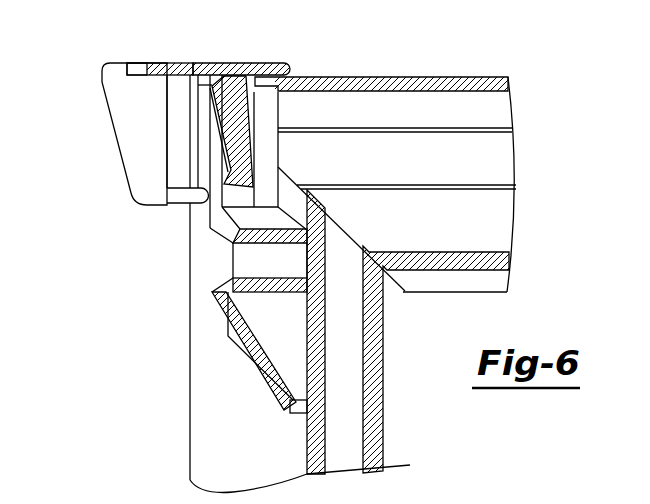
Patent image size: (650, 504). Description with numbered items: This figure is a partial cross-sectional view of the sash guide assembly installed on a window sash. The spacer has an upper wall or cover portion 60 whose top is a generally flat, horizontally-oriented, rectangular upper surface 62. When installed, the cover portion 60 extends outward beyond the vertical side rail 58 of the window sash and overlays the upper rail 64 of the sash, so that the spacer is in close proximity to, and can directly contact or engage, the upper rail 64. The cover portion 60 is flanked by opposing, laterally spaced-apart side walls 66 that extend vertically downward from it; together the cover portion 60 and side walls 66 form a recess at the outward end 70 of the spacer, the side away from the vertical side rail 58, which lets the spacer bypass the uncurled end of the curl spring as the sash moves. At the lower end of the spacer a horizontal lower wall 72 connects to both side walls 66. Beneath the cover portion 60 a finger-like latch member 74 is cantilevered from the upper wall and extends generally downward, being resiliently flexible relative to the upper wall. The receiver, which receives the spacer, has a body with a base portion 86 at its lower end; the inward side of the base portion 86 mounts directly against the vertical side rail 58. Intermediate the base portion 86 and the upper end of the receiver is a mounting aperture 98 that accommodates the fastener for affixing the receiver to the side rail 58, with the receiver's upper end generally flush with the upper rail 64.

The outward end 70 is at (143, 55).
The upper surface 62 is at (193, 63).
The cover portion 60 is at (233, 72).
The upper rail 64 is at (402, 77).
The side walls 66 is at (118, 100).
The latch member 74 is at (240, 132).
The lower wall 72 is at (181, 205).
The mounting aperture 98 is at (252, 279).
The base portion 86 is at (289, 413).
The vertical side rail 58 is at (307, 459).